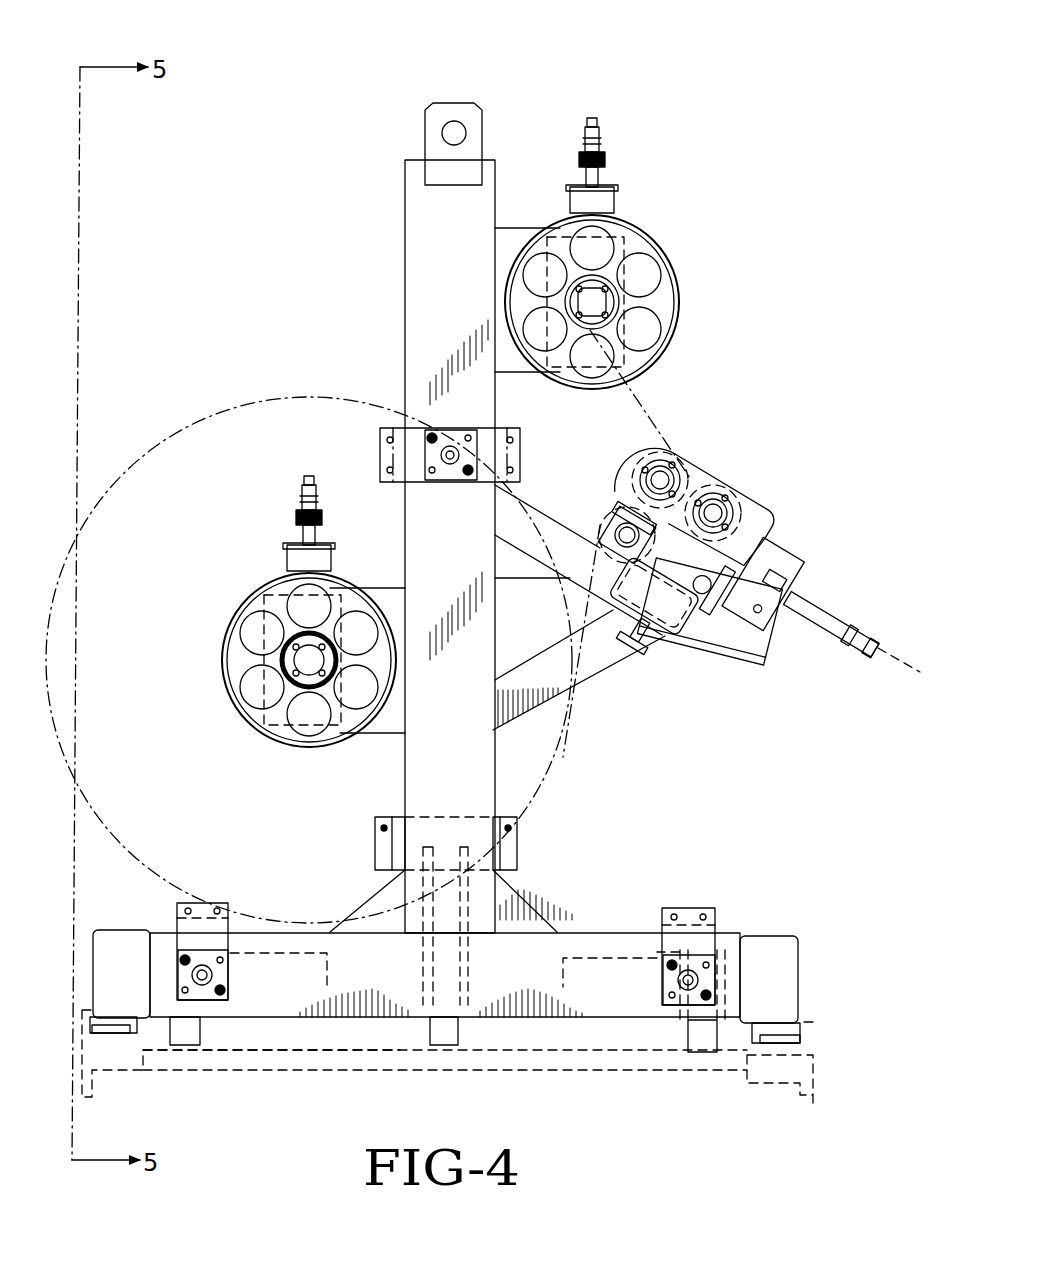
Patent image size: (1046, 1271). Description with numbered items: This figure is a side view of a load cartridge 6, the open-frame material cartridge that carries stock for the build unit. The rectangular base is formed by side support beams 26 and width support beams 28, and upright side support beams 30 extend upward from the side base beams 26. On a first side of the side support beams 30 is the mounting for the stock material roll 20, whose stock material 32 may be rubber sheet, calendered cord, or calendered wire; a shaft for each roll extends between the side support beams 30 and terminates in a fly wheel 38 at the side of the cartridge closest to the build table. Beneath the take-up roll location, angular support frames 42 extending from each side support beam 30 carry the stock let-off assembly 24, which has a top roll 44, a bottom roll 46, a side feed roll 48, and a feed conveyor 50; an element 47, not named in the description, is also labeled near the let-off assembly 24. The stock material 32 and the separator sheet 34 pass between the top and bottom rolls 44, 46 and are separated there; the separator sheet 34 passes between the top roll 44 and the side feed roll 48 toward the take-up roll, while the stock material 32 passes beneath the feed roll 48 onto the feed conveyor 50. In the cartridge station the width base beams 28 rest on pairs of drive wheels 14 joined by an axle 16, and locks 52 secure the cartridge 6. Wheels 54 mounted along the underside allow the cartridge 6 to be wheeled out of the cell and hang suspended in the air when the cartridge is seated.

The load cartridge 6 is at (752, 112).
The drive wheels 14 is at (815, 1032).
The axle 16 is at (553, 1078).
The stock material roll 20 is at (208, 418).
The stock let-off assembly 24 is at (752, 466).
The side support beams 26 is at (605, 992).
The width support beams 28 is at (130, 950).
The side support beams 30 is at (440, 252).
The stock material 32 is at (878, 650).
The separator sheet 34 is at (650, 415).
The fly wheel 38 is at (650, 232).
The angular support frames 42 is at (555, 540).
The top roll 44 is at (680, 445).
The bottom roll 46 is at (616, 505).
The shaft 47 is at (713, 470).
The side feed roll 48 is at (745, 505).
The feed conveyor 50 is at (807, 616).
The locks 52 is at (455, 440).
The wheels 54 is at (183, 1030).